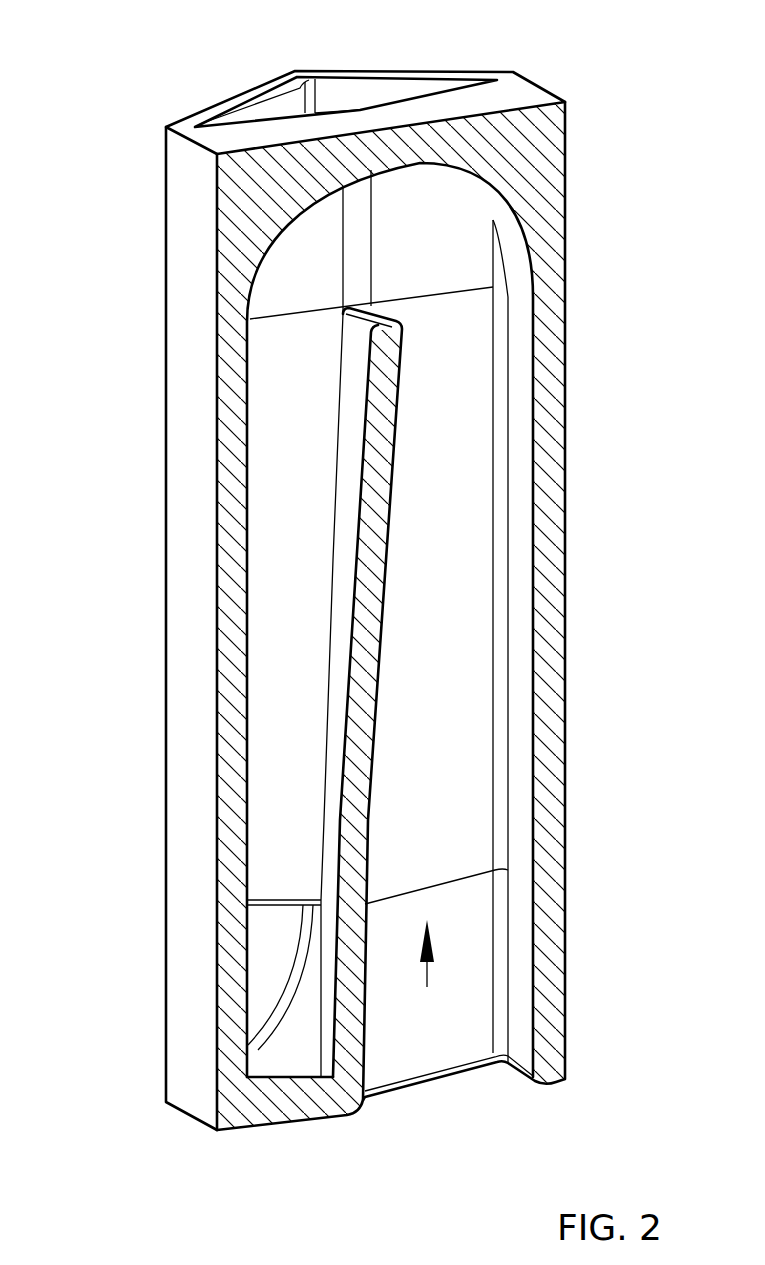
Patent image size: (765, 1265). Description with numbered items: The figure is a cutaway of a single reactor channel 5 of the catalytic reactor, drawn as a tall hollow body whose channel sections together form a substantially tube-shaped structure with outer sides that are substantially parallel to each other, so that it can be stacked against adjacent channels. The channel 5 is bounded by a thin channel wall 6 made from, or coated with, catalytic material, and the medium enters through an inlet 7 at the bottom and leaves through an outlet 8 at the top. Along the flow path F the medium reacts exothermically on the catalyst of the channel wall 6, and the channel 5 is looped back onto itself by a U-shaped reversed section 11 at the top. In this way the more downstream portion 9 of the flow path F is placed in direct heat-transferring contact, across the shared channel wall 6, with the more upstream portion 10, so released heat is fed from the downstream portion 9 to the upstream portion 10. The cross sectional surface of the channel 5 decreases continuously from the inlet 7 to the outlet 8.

The reactor channel 5 is at (437, 758).
The channel wall 6 is at (363, 667).
The inlet 7 is at (439, 1097).
The outlet 8 is at (331, 86).
The more downstream portion 9 is at (288, 471).
The more upstream portion 10 is at (437, 471).
The reversed section 11 is at (359, 248).
The flow path F is at (427, 987).